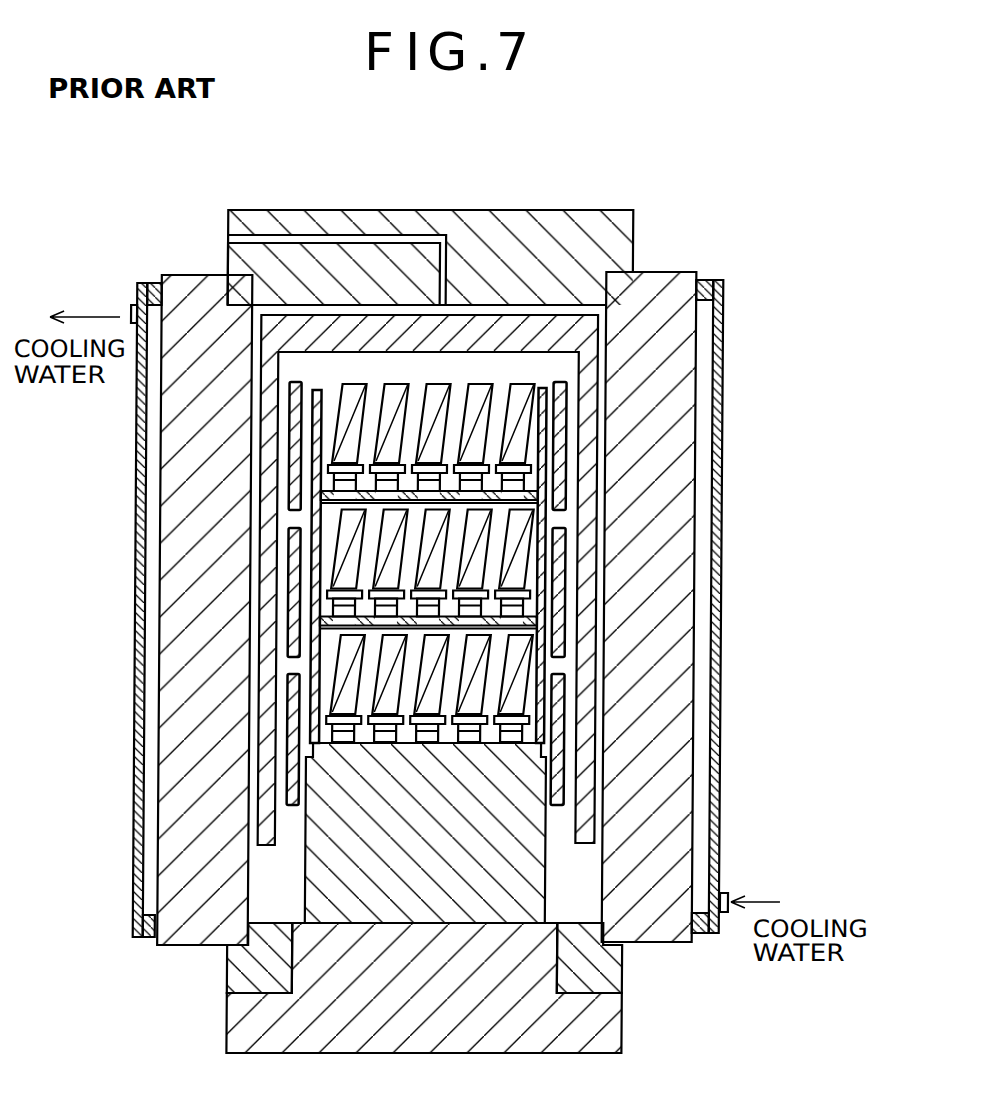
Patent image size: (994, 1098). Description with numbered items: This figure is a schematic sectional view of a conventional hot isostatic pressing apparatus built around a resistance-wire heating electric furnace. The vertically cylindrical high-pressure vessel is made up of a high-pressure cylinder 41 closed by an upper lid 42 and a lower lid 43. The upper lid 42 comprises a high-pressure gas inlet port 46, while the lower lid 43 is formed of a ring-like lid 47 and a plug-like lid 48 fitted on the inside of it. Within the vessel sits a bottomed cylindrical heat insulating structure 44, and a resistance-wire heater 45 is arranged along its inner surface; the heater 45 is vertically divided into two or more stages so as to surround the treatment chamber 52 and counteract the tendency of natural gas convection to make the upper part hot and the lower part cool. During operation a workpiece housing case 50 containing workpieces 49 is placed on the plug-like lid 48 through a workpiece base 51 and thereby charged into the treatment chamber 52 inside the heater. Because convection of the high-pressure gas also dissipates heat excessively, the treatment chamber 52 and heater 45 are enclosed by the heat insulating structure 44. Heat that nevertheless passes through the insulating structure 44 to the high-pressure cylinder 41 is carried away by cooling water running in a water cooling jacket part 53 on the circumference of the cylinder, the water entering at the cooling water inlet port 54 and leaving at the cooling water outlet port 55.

The high-pressure cylinder 41 is at (697, 418).
The upper lid 42 is at (578, 208).
The lower lid 43 is at (634, 1010).
The heat insulating structure 44 is at (598, 388).
The resistance-wire heater 45 is at (563, 457).
The high-pressure gas inlet port 46 is at (287, 240).
The ring-like lid 47 is at (597, 982).
The plug-like lid 48 is at (605, 1042).
The workpieces 49 is at (533, 668).
The workpiece housing case 50 is at (550, 600).
The workpiece base 51 is at (545, 863).
The treatment chamber 52 is at (517, 370).
The water cooling jacket part 53 is at (724, 520).
The cooling water inlet port 54 is at (735, 892).
The cooling water outlet port 55 is at (130, 307).